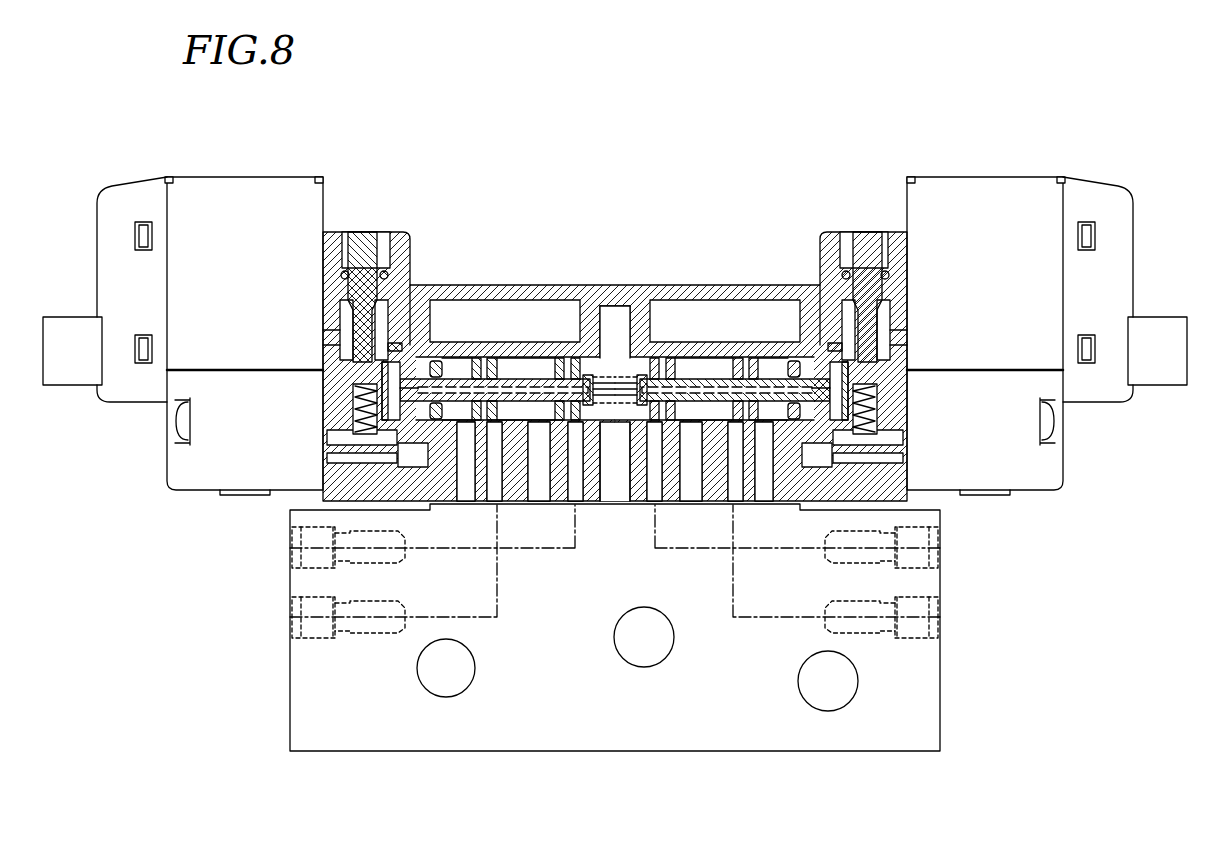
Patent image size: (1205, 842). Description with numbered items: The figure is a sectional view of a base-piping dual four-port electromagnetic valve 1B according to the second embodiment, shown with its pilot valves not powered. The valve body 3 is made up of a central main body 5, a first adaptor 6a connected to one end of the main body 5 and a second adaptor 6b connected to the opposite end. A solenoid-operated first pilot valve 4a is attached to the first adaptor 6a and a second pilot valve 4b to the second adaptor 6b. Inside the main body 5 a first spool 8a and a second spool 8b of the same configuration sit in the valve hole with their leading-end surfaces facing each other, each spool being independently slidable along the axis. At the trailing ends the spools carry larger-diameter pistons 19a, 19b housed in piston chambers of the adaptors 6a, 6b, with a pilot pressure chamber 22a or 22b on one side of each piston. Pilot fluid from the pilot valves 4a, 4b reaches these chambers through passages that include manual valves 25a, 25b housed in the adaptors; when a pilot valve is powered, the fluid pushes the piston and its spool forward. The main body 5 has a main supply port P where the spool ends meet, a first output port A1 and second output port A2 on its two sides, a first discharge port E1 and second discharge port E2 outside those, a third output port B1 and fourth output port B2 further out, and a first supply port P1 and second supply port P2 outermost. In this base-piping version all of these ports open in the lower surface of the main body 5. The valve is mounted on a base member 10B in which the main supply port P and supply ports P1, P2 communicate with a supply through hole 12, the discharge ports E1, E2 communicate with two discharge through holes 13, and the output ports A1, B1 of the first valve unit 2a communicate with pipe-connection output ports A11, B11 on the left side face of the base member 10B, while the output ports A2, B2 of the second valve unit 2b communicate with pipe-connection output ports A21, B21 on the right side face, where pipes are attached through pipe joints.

The electromagnetic valve 1B is at (663, 73).
The first valve unit 2a is at (507, 148).
The second valve unit 2b is at (732, 152).
The valve body 3 is at (658, 268).
The first pilot valve 4a is at (218, 200).
The second pilot valve 4b is at (1003, 200).
The main body 5 is at (603, 300).
The first adaptor 6a is at (398, 250).
The second adaptor 6b is at (824, 250).
The first spool 8a is at (505, 358).
The second spool 8b is at (700, 358).
The first piston 19a is at (398, 345).
The second piston 19b is at (823, 345).
The first pilot pressure chamber 22a is at (333, 433).
The second pilot pressure chamber 22b is at (893, 433).
The first manual valve 25a is at (362, 245).
The second manual valve 25b is at (866, 245).
The base member 10B is at (352, 718).
The supply through hole 12 is at (648, 645).
The discharge through holes 13 is at (446, 670).
The first pipe-connection output port A11 is at (290, 552).
The third pipe-connection output port B11 is at (290, 620).
The second pipe-connection output port A21 is at (940, 552).
The fourth pipe-connection output port B21 is at (940, 620).
The first supply port P1 is at (463, 505).
The second supply port P2 is at (769, 480).
The main supply port P is at (612, 475).
The first output port A1 is at (575, 483).
The second output port A2 is at (655, 483).
The third output port B1 is at (500, 483).
The fourth output port B2 is at (733, 483).
The first discharge port E1 is at (538, 470).
The second discharge port E2 is at (690, 470).